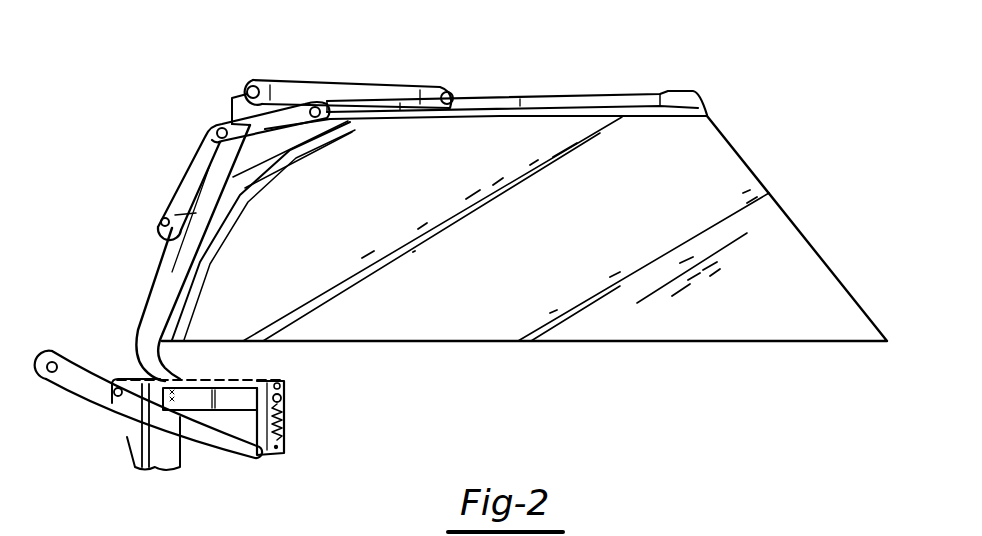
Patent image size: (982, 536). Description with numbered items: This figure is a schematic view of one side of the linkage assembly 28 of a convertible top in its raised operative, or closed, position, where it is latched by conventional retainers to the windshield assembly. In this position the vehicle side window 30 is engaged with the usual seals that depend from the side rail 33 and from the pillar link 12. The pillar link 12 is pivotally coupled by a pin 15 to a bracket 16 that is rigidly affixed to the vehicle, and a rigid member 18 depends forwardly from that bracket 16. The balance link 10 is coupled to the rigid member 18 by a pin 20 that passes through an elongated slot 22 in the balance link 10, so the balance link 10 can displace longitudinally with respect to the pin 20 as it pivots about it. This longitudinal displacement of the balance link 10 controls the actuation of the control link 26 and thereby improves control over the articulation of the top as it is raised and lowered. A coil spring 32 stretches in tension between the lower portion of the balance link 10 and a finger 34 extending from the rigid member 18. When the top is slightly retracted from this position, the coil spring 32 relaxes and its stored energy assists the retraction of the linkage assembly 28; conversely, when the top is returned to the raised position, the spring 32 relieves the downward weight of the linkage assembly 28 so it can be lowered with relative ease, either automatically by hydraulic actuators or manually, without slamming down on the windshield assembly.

The balance link 10 is at (167, 288).
The pillar link 12 is at (125, 364).
The pin 15 is at (117, 395).
The bracket 16 is at (130, 437).
The rigid member 18 is at (212, 404).
The pin 20 is at (284, 403).
The elongated slot 22 is at (281, 390).
The control link 26 is at (200, 141).
The linkage assembly 28 is at (184, 87).
The vehicle side window 30 is at (612, 234).
The coil spring 32 is at (288, 440).
The side rail 33 is at (543, 100).
The finger 34 is at (288, 380).